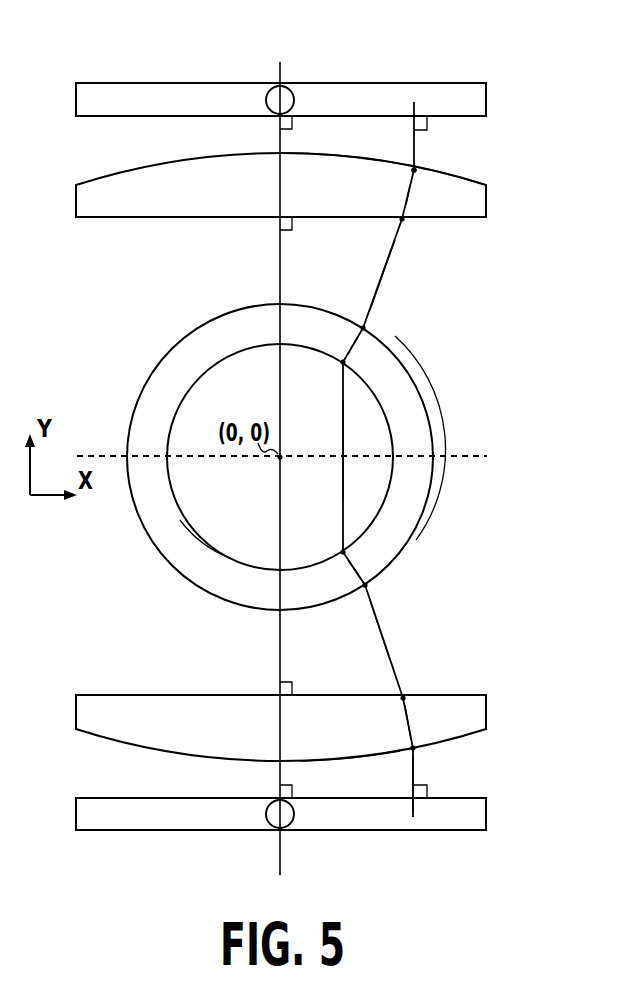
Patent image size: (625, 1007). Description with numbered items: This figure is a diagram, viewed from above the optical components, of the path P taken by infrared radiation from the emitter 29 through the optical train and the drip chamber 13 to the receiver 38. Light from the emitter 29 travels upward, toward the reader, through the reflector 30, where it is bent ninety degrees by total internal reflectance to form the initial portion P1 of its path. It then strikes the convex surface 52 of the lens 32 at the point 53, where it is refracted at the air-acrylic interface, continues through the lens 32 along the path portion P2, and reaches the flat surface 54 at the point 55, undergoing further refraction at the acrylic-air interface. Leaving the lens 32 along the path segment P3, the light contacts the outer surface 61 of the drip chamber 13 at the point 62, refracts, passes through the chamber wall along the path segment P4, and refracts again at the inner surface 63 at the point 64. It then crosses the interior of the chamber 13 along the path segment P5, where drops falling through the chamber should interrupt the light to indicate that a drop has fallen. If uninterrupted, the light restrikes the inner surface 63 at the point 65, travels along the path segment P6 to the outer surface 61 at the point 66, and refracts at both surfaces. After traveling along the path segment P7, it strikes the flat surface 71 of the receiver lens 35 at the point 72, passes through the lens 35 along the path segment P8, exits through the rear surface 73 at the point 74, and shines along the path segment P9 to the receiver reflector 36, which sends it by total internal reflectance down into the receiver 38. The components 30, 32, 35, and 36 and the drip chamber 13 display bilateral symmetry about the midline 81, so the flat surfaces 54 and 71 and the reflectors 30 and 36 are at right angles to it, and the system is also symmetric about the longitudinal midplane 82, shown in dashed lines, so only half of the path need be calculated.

The drip chamber 13 is at (412, 497).
The emitter 29 is at (288, 828).
The reflector 30 is at (486, 814).
The lens 32 is at (486, 716).
The receiver lens 35 is at (486, 204).
The receiver reflector 36 is at (486, 101).
The receiver 38 is at (288, 88).
The convex surface 52 is at (324, 760).
The point 53 is at (412, 747).
The flat surface 54 is at (322, 694).
The point 55 is at (402, 697).
The outer surface 61 is at (413, 545).
The point 62 is at (367, 587).
The inner surface 63 is at (200, 530).
The point 64 is at (342, 552).
The point 65 is at (346, 364).
The point 66 is at (366, 328).
The flat surface 71 is at (294, 226).
The point 72 is at (404, 221).
The rear surface 73 is at (466, 179).
The point 74 is at (416, 168).
The midline 81 is at (279, 858).
The midplane 82 is at (470, 458).
The path P is at (416, 678).
The initial portion of path P1 is at (414, 776).
The path portion P2 is at (408, 714).
The path segment P3 is at (382, 630).
The path segment P4 is at (356, 574).
The path segment P5 is at (342, 432).
The path segment P6 is at (344, 360).
The path segment P7 is at (384, 290).
The path segment P8 is at (406, 196).
The path segment P9 is at (413, 134).